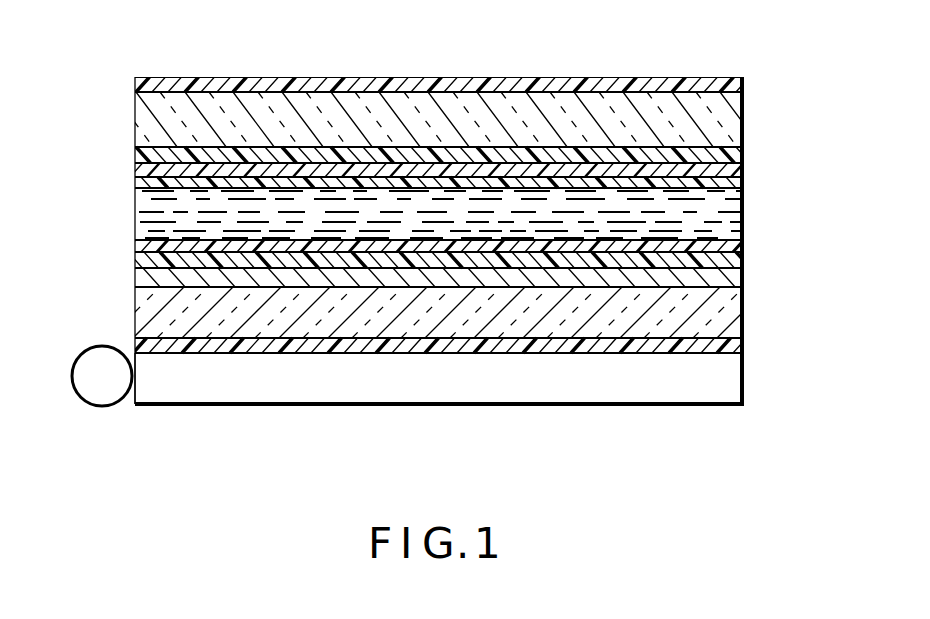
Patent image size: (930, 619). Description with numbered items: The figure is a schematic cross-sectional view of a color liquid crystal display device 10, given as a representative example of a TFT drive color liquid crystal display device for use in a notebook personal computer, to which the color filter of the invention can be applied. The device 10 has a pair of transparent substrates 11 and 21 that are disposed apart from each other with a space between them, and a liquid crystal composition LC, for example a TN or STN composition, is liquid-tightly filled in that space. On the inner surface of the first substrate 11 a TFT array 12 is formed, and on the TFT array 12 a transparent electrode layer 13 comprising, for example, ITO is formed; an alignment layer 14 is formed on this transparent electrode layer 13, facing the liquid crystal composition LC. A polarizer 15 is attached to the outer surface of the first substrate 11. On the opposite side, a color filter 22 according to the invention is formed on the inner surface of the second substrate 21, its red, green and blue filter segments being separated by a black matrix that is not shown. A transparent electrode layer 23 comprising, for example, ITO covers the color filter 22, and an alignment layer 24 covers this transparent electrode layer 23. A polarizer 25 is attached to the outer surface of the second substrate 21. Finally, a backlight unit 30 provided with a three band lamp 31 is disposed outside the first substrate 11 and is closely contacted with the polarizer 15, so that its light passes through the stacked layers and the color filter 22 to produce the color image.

The color liquid crystal display device 10 is at (505, 60).
The first transparent substrate 11 is at (742, 318).
The TFT array 12 is at (742, 278).
The transparent electrode layer 13 is at (138, 263).
The alignment layer 14 is at (742, 247).
The polarizer 15 is at (742, 348).
The second transparent substrate 21 is at (140, 127).
The color filter 22 is at (742, 158).
The transparent electrode layer 23 is at (138, 168).
The alignment layer 24 is at (742, 183).
The polarizer 25 is at (742, 89).
The liquid crystal composition LC is at (140, 217).
The backlight unit 30 is at (486, 403).
The three band lamp 31 is at (77, 384).